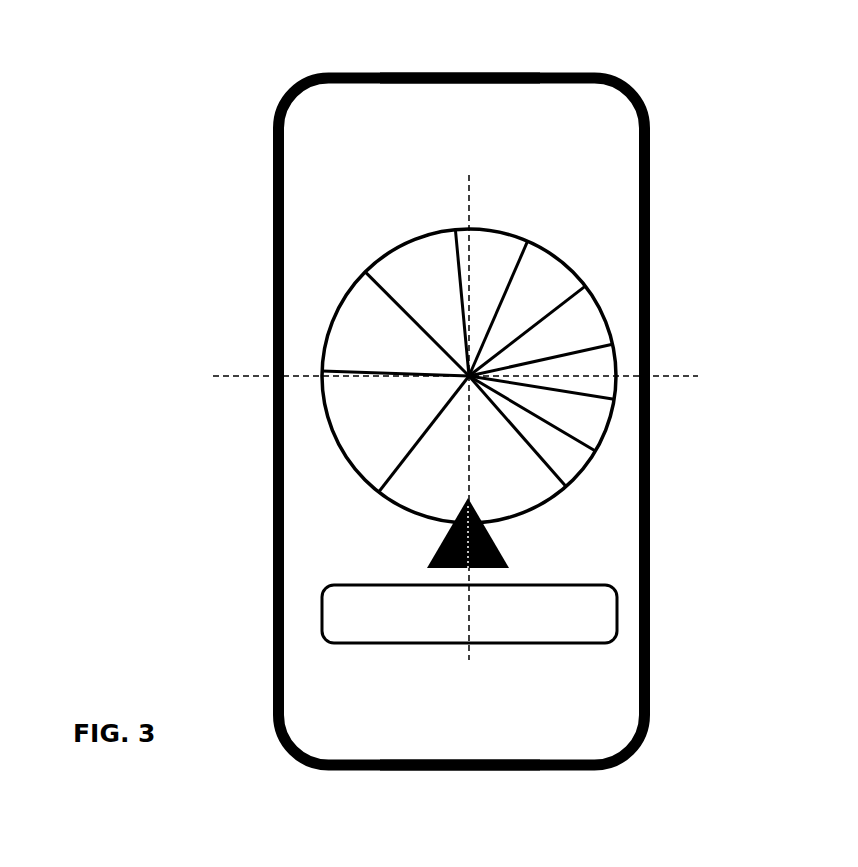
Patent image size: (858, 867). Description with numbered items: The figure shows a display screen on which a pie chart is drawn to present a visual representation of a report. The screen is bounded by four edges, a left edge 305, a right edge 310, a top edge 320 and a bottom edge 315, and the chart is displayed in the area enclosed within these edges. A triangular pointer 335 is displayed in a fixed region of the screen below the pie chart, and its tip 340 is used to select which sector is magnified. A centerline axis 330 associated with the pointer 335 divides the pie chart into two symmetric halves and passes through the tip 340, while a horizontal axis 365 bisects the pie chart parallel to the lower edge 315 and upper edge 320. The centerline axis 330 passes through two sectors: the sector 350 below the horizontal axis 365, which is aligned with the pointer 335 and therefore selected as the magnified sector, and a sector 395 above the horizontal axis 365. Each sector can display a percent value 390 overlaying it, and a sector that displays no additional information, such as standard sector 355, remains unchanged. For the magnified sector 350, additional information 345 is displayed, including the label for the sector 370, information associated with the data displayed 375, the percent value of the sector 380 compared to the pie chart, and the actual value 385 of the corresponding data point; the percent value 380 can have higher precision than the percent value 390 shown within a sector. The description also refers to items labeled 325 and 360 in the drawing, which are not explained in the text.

The left edge 305 is at (273, 272).
The right edge 310 is at (648, 340).
The bottom edge 315 is at (500, 772).
The top edge 320 is at (502, 72).
The pie chart 325 is at (582, 320).
The centerline axis 330 is at (470, 180).
The pointer 335 is at (495, 538).
The tip 340 is at (467, 497).
The additional information 345 is at (323, 612).
The sector 350 is at (425, 483).
The standard sector 355 is at (368, 450).
The pie chart center 360 is at (467, 377).
The horizontal axis 365 is at (678, 377).
The label for the sector 370 is at (360, 600).
The information associated with the data displayed 375 is at (360, 633).
The percent value of the sector 380 is at (537, 606).
The actual value 385 is at (547, 635).
The percent value 390 is at (560, 460).
The sector 395 is at (488, 248).